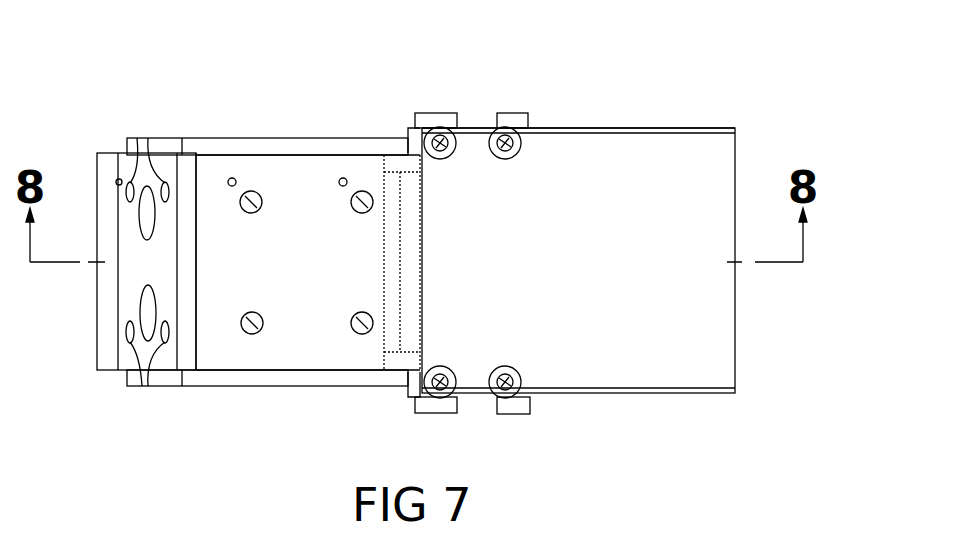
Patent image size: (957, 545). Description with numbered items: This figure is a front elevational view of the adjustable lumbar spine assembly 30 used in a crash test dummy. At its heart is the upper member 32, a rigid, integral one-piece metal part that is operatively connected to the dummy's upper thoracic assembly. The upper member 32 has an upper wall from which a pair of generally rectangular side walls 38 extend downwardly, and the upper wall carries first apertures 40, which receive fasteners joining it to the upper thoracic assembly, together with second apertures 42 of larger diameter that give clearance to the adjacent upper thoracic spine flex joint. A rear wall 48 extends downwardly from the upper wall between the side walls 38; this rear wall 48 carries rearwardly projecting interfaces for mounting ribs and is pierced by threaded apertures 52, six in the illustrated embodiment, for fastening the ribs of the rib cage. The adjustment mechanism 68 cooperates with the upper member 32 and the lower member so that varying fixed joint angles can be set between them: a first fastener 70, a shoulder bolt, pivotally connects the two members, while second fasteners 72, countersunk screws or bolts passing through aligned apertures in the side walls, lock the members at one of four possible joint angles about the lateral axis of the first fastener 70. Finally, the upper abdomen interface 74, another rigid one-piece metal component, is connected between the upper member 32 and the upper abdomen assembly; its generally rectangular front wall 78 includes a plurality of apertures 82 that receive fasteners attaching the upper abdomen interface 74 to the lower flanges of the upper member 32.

The adjustable lumbar spine assembly 30 is at (712, 70).
The upper member 32 is at (189, 133).
The side walls 38 is at (310, 150).
The first apertures 40 is at (143, 145).
The second apertures 42 is at (153, 205).
The rear wall 48 is at (305, 365).
The apertures 52 is at (250, 200).
The adjustment mechanism 68 is at (530, 415).
The first fastener 70 is at (425, 118).
The second fasteners 72 is at (510, 117).
The upper abdomen interface 74 is at (623, 128).
The front wall 78 is at (712, 155).
The apertures 82 is at (503, 140).